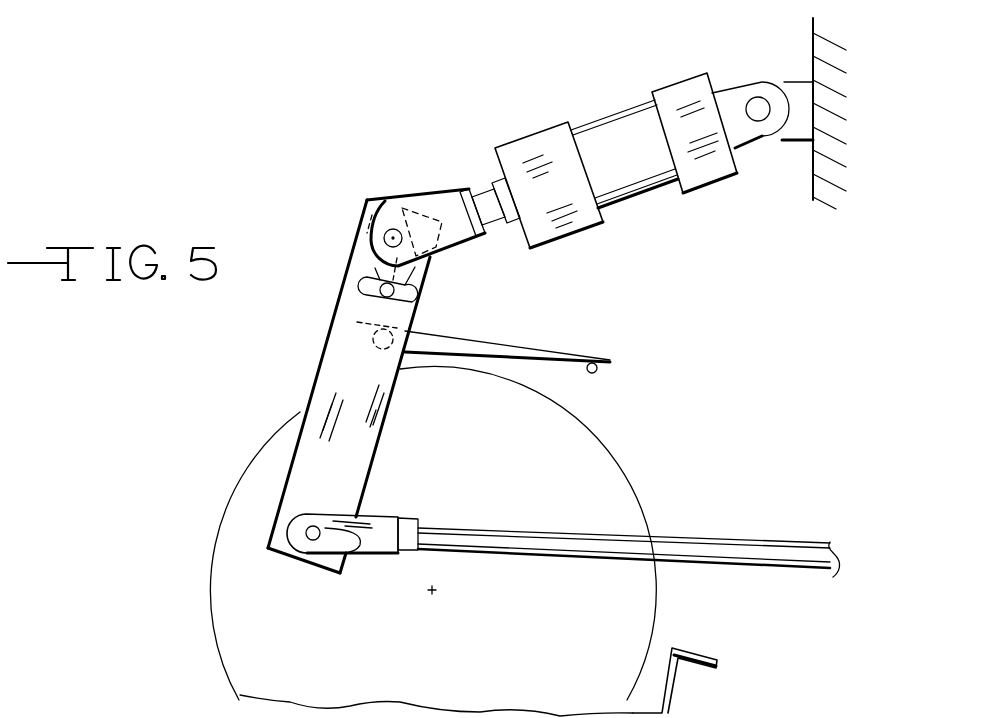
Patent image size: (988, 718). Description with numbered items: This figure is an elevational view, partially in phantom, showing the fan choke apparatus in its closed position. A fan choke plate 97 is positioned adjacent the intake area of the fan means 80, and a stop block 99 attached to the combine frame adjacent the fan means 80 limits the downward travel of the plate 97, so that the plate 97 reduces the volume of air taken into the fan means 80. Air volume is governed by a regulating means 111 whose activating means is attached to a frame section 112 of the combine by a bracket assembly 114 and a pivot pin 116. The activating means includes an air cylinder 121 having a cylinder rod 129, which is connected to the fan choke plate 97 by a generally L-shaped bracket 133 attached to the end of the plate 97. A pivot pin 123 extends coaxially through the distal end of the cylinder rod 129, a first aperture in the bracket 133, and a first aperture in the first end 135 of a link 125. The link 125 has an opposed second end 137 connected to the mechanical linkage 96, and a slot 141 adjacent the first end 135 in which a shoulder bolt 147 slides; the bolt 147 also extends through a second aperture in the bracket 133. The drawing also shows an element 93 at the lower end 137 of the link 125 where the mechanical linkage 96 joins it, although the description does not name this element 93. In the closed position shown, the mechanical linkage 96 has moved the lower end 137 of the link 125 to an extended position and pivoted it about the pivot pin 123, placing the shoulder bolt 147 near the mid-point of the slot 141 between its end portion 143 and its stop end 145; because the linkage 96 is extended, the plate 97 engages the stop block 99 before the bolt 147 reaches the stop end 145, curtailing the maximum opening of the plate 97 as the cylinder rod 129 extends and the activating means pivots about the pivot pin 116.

The fan means 80 is at (212, 515).
The clevis 93 is at (366, 554).
The mechanical linkage 96 is at (432, 513).
The fan choke plate 97 is at (543, 345).
The stop block 99 is at (592, 377).
The regulating means 111 is at (602, 160).
The frame section 112 is at (813, 43).
The bracket assembly 114 is at (787, 142).
The pivot pin 116 is at (752, 97).
The cylinder 121 is at (600, 110).
The pivot pin 123 is at (394, 229).
The link 125 is at (357, 378).
The cylinder rod 129 is at (480, 186).
The bracket 133 is at (358, 316).
The first end 135 is at (362, 218).
The second end 137 is at (284, 556).
The slot 141 is at (375, 268).
The end portion 143 is at (417, 298).
The stop end 145 is at (362, 296).
The shoulder bolt 147 is at (413, 285).